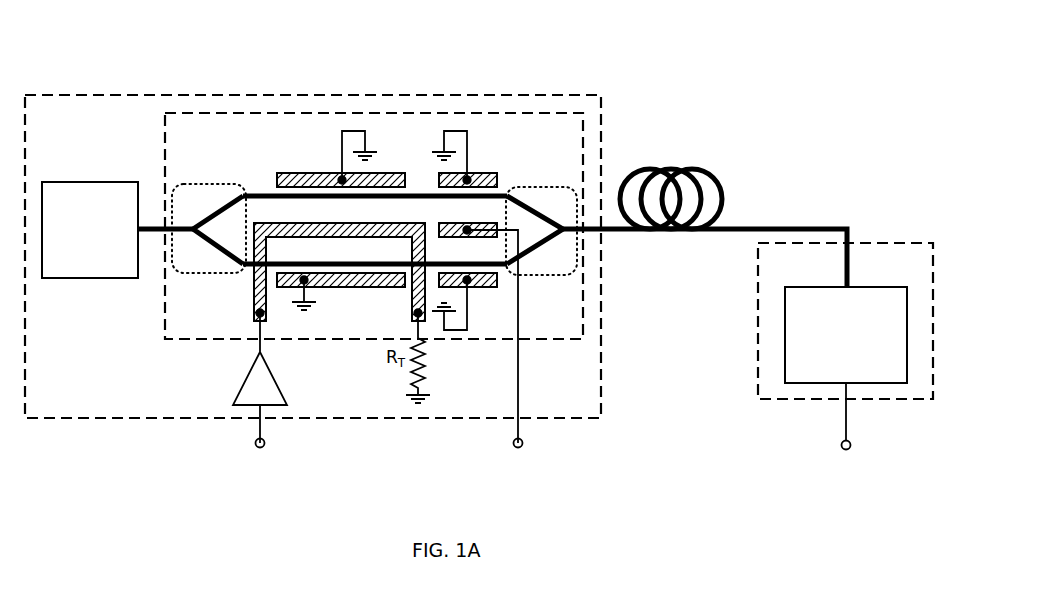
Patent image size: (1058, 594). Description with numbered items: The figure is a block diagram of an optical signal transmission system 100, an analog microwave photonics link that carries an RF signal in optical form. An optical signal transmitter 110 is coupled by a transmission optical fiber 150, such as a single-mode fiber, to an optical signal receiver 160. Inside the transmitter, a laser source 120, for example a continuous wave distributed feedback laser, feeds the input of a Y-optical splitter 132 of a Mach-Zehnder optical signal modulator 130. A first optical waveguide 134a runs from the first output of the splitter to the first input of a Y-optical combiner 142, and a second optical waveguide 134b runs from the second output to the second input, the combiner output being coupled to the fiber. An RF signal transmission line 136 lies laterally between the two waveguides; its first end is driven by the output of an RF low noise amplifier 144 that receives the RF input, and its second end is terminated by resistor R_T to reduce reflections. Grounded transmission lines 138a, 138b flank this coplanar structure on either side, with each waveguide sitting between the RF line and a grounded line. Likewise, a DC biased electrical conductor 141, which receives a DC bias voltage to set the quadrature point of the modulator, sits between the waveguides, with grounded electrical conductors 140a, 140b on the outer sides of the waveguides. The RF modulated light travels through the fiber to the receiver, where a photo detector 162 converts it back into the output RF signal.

The optical signal transmission system 100 is at (697, 64).
The optical signal transmitter 110 is at (313, 256).
The laser source 120 is at (90, 230).
The optical signal modulator 130 is at (374, 226).
The Y-optical splitter 132 is at (209, 228).
The first optical waveguide 134a is at (270, 194).
The second optical waveguide 134b is at (251, 273).
The RF signal transmission line 136 is at (342, 223).
The grounded transmission line 138a is at (340, 173).
The grounded transmission line 138b is at (325, 287).
The grounded electrical conductor 140a is at (483, 173).
The grounded electrical conductor 140b is at (492, 287).
The DC biased electrical conductor 141 is at (449, 223).
The Y-optical combiner 142 is at (541, 231).
The radio frequency low noise amplifier 144 is at (246, 378).
The transmission optical fiber 150 is at (672, 169).
The optical signal receiver 160 is at (845, 321).
The photo detector 162 is at (846, 397).